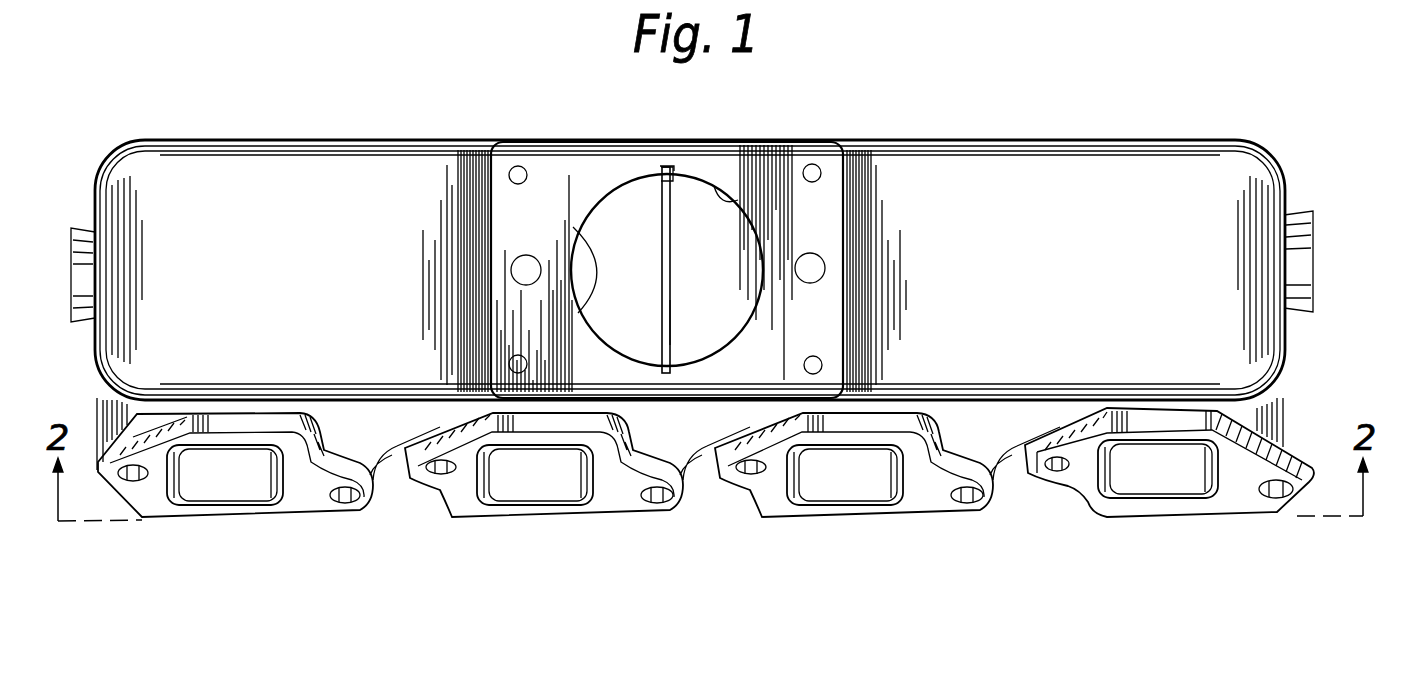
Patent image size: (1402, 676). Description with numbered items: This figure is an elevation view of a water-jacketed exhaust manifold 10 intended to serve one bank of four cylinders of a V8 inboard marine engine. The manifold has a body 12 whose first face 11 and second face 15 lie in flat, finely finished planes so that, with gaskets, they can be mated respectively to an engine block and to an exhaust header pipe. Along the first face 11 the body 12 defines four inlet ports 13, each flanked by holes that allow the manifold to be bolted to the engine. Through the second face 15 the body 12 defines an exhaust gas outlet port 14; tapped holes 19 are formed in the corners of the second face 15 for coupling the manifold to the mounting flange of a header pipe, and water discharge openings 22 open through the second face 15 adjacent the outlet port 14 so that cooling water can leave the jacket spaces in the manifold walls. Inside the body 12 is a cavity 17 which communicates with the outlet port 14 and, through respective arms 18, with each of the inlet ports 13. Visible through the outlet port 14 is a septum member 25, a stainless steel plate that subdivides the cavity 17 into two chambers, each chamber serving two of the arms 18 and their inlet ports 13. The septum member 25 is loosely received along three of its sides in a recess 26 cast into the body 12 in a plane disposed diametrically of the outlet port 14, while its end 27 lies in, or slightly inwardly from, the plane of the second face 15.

The water-jacketed exhaust manifold 10 is at (1187, 119).
The first face 11 is at (158, 508).
The body 12 is at (273, 184).
The inlet ports 13 is at (240, 493).
The outlet port 14 is at (722, 197).
The second face 15 is at (617, 163).
The cavity 17 is at (604, 308).
The arms 18 is at (574, 227).
The tapped holes 19 is at (815, 165).
The water discharge openings 22 is at (511, 273).
The septum member 25 is at (671, 276).
The recess 26 is at (670, 168).
The end 27 is at (668, 323).